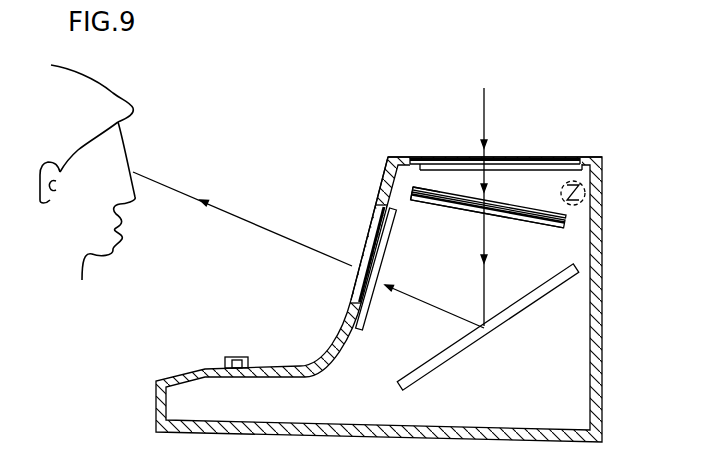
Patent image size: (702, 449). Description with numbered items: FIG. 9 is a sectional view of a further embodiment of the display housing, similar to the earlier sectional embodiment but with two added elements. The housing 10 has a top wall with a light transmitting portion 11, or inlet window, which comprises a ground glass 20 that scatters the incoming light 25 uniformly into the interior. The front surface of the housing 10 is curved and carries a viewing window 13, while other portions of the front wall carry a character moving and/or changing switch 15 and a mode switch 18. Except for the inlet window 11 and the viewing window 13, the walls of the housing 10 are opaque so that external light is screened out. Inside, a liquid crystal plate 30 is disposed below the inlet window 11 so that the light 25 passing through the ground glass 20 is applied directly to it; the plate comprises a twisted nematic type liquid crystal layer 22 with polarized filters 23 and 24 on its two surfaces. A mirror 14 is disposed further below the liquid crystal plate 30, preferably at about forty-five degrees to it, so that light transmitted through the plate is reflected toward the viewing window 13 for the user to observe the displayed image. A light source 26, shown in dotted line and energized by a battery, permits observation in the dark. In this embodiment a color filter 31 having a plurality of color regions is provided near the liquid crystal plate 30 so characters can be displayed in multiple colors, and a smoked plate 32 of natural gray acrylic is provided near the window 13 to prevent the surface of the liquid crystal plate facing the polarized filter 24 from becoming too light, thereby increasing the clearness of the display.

The housing 10 is at (603, 382).
The light transmitting portion 11 is at (525, 153).
The viewing window 13 is at (362, 221).
The mirror 14 is at (545, 296).
The character moving and/or changing switch 15 is at (230, 356).
The mode switch 18 is at (247, 355).
The ground glass 20 is at (555, 162).
The twisted nematic type liquid crystal layer 22 is at (565, 225).
The polarized filter 23 is at (566, 216).
The polarized filter 24 is at (563, 233).
The incoming light 25 is at (486, 110).
The light source 26 is at (591, 212).
The liquid crystal plate 30 is at (403, 193).
The color filter 31 is at (425, 186).
The smoked plate 32 is at (365, 305).